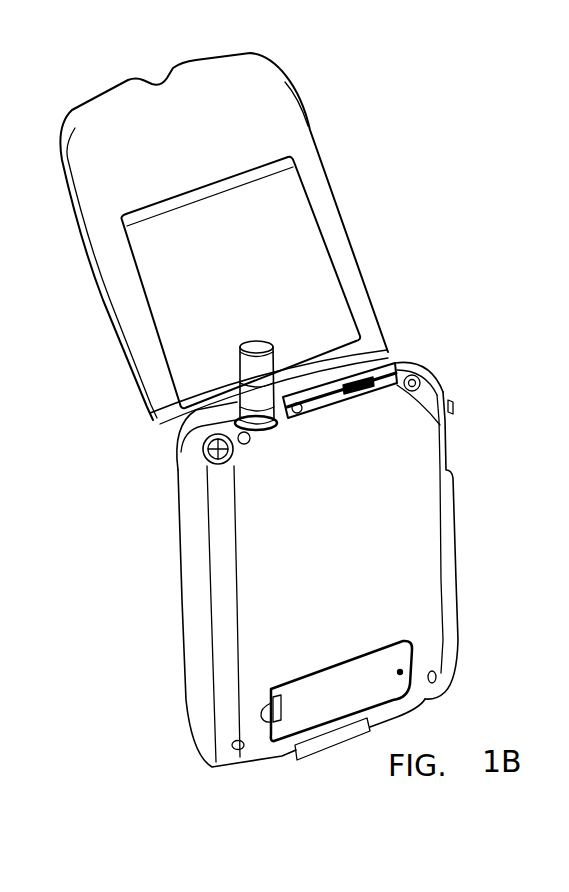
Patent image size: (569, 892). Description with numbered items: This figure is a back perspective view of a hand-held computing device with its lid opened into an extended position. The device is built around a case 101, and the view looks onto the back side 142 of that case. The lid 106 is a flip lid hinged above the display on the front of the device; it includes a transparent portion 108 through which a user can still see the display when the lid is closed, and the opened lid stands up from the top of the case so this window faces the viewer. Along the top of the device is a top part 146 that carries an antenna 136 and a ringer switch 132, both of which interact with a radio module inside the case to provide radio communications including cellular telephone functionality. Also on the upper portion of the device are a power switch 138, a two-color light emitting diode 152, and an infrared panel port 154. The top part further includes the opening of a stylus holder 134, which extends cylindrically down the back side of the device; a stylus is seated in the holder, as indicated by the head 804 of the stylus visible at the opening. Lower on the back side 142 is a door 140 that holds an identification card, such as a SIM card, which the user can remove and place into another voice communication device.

The case 101 is at (268, 632).
The lid 106 is at (372, 305).
The transparent portion 108 is at (297, 253).
The ringer switch 132 is at (413, 362).
The stylus holder 134 is at (177, 472).
The antenna 136 is at (150, 415).
The power switch 138 is at (297, 415).
The door 140 is at (385, 703).
The back side 142 is at (397, 600).
The top part 146 is at (425, 368).
The two-color light emitting diode 152 is at (330, 410).
The infrared panel port 154 is at (330, 407).
The head of the stylus 804 is at (200, 447).